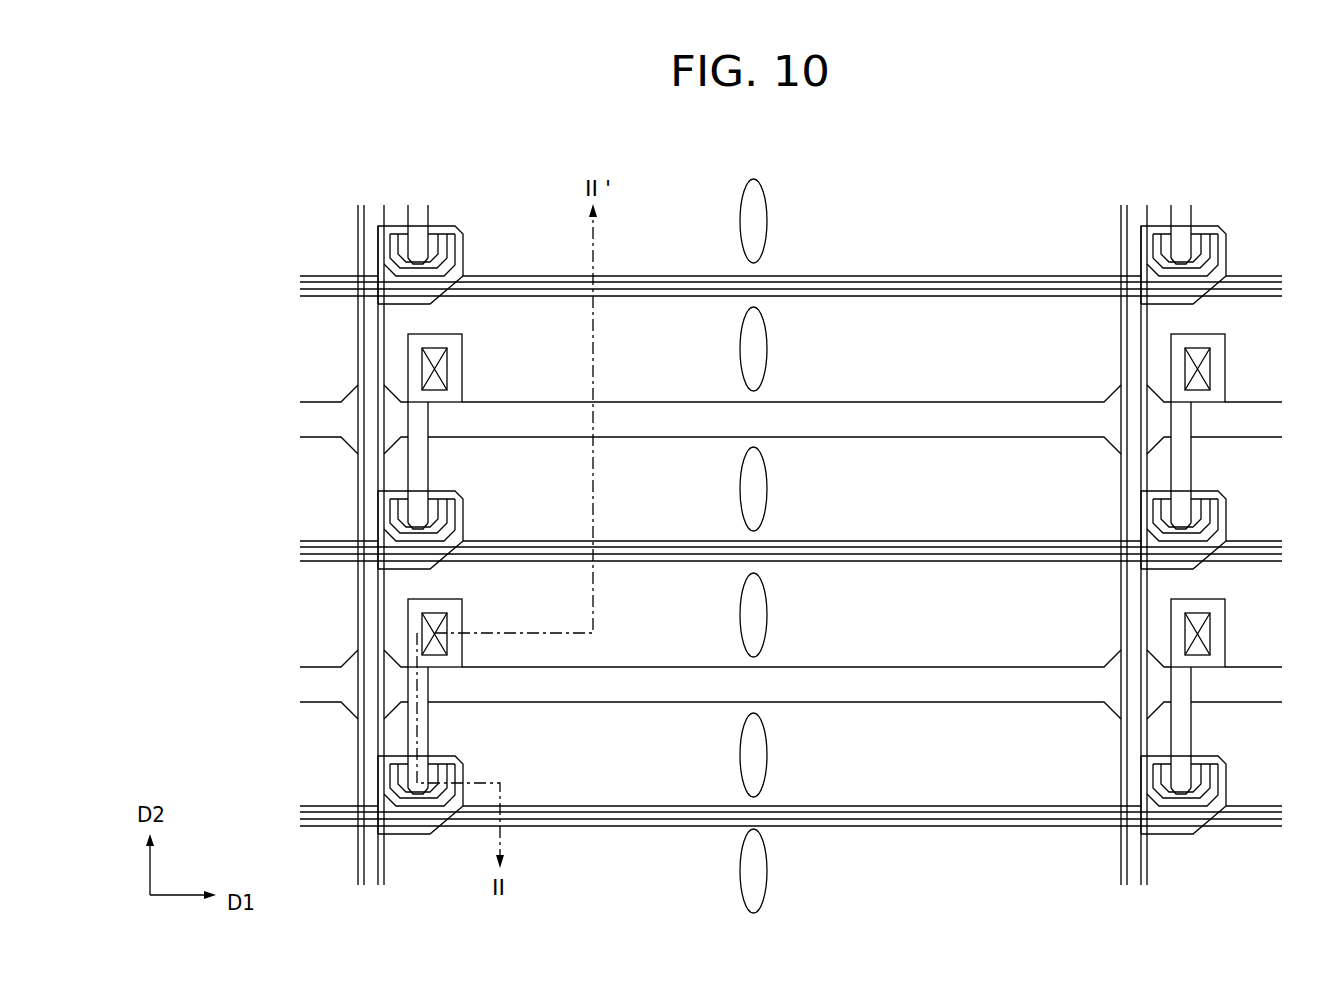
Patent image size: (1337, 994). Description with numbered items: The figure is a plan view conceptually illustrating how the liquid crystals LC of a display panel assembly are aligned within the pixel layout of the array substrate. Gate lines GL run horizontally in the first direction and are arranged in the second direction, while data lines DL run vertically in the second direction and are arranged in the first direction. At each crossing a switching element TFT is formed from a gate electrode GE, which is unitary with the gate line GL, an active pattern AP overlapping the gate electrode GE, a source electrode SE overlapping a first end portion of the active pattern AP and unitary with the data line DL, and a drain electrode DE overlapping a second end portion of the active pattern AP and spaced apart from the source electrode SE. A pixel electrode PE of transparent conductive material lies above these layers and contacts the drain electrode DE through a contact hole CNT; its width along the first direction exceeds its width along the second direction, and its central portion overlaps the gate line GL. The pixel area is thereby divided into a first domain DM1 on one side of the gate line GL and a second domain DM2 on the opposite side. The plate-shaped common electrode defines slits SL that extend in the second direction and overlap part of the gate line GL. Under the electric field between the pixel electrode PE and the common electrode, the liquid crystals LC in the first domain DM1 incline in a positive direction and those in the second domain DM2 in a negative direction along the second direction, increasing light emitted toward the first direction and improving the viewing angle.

The gate line GL is at (845, 276).
The slits SL is at (897, 290).
The data line DL is at (372, 313).
The pixel electrode PE is at (955, 332).
The first domain DM1 is at (980, 630).
The second domain DM2 is at (1020, 462).
The liquid crystals LC is at (740, 221).
The contact hole CNT is at (428, 366).
The switching element TFT is at (698, 519).
The gate electrode GE is at (398, 490).
The active pattern AP is at (398, 527).
The source electrode SE is at (447, 548).
The drain electrode DE is at (410, 459).